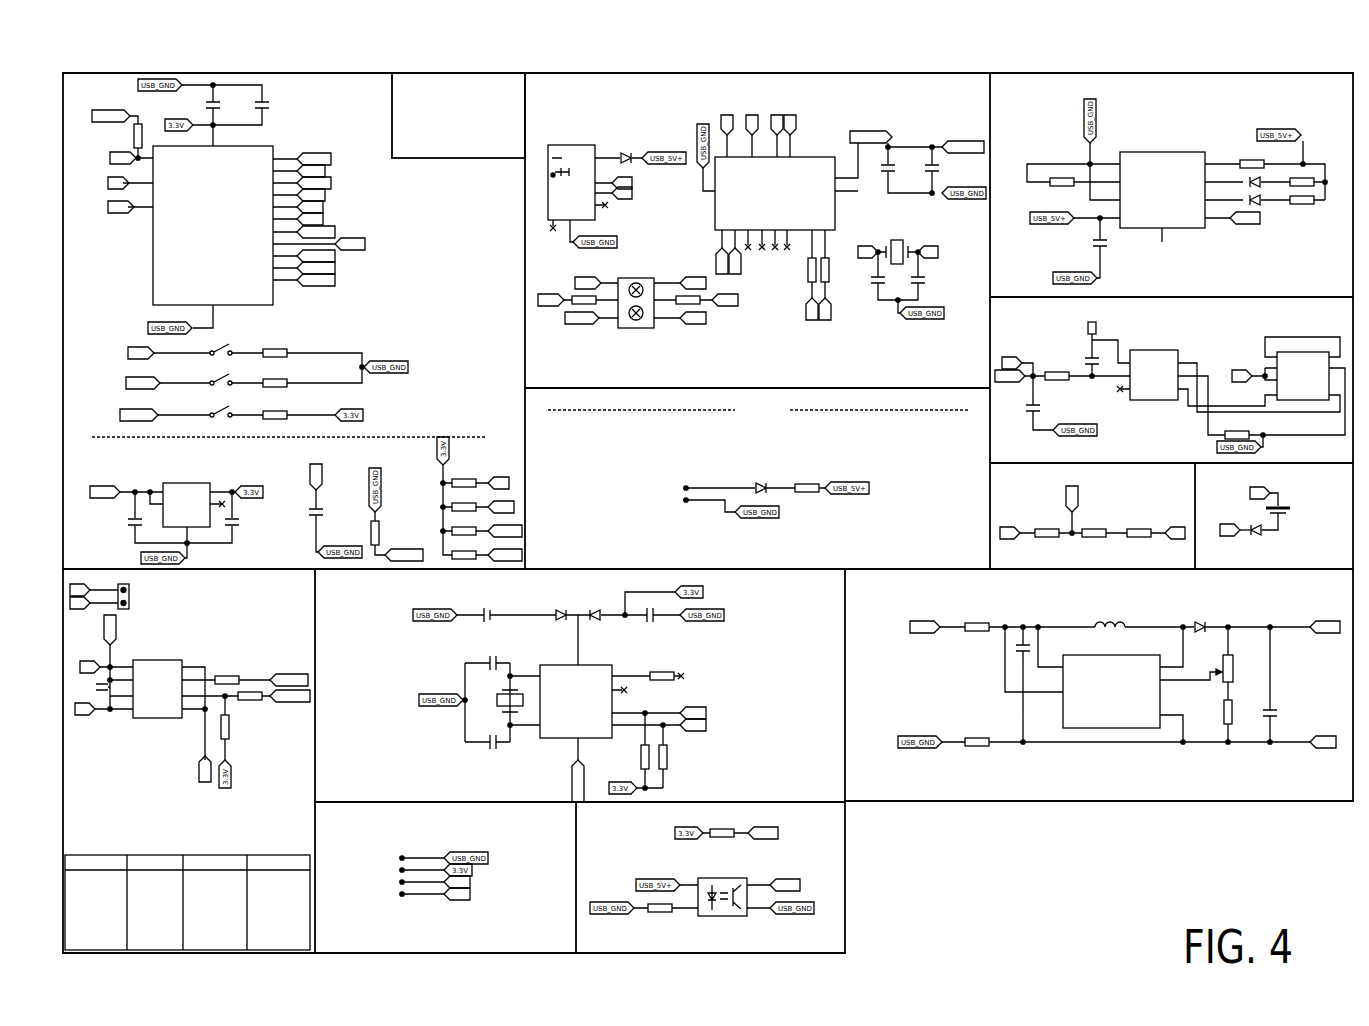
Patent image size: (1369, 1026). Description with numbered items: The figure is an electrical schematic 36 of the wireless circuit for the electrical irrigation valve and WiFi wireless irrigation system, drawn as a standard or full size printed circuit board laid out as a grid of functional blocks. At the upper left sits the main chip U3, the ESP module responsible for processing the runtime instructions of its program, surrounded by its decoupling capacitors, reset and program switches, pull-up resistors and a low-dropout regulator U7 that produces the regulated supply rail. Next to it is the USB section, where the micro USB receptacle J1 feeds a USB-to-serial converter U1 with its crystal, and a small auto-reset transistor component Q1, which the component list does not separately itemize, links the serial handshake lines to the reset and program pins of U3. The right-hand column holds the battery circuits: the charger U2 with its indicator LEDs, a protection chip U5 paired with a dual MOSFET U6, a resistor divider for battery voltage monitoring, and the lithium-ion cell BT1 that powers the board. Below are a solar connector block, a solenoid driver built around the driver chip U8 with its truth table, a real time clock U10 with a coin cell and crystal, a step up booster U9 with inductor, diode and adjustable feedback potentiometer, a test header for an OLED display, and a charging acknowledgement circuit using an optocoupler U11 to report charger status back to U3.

The electrical schematic 36 is at (944, 876).
The ESP-07 module U3 is at (236, 226).
The CH340G USB-to-serial chip U1 is at (775, 193).
The TP4056 battery charger U2 is at (1162, 178).
The DW01A battery protection chip U5 is at (1154, 364).
The FS8205A dual MOSFET U6 is at (1302, 364).
The AP2112K-3.3 voltage regulator U7 is at (182, 499).
The SOP-8 driver chip U8 is at (157, 679).
The MT3608 step-up converter U9 is at (1111, 691).
The PCF8563T real-time clock U10 is at (576, 701).
The PC817 optocoupler U11 is at (722, 887).
The USB micro-B connector J1 is at (571, 171).
The UMH3N auto-reset transistor Q1 is at (633, 305).
The 18650 lithium-ion battery BT1 is at (1272, 529).